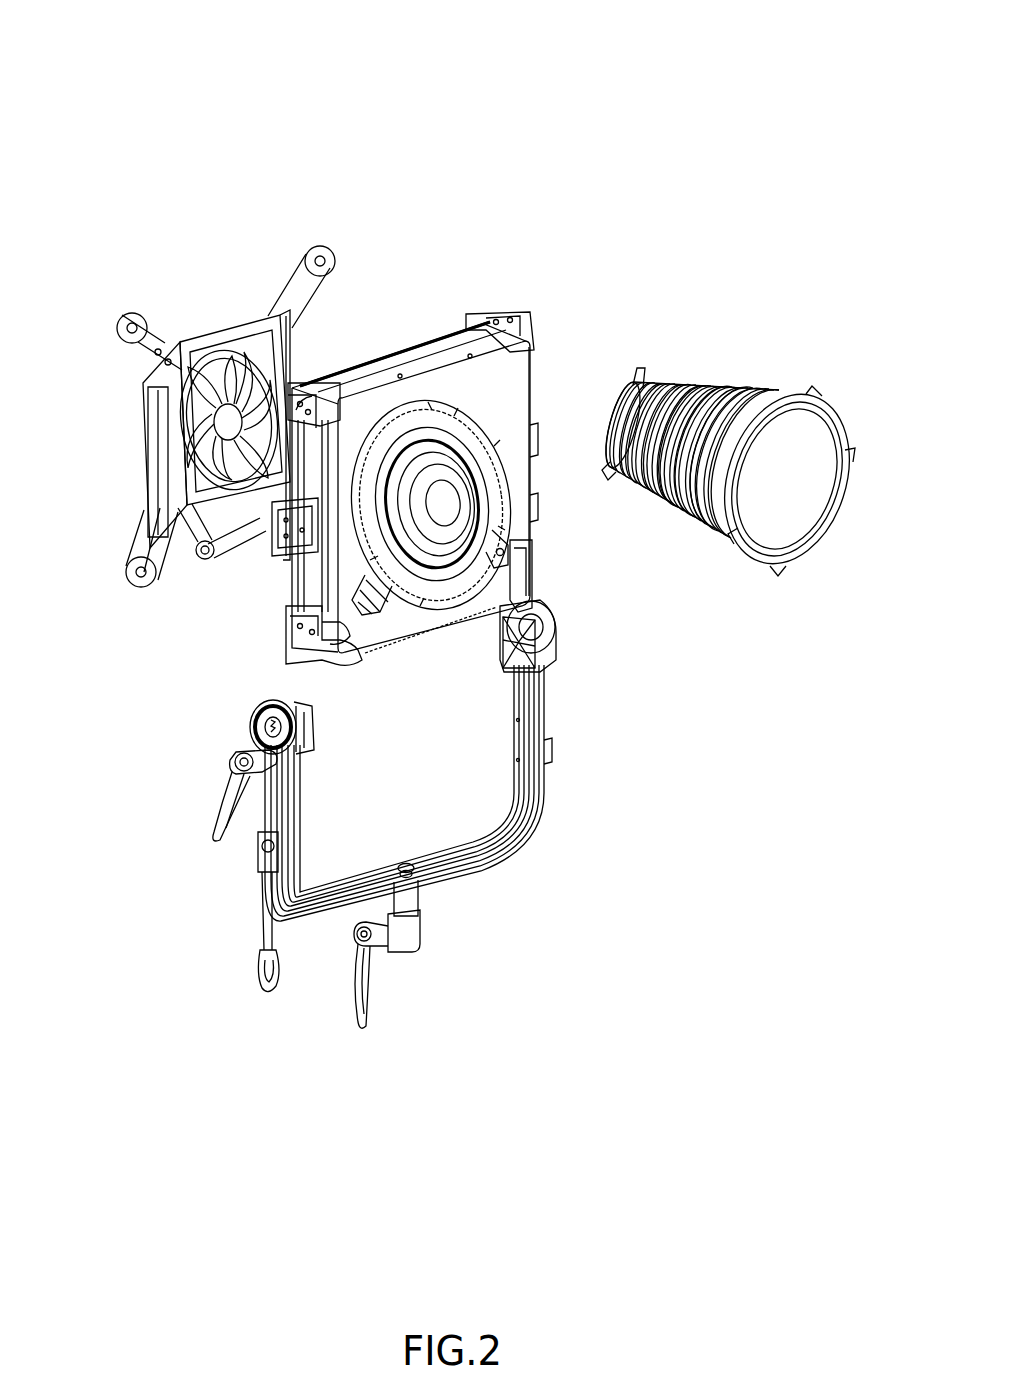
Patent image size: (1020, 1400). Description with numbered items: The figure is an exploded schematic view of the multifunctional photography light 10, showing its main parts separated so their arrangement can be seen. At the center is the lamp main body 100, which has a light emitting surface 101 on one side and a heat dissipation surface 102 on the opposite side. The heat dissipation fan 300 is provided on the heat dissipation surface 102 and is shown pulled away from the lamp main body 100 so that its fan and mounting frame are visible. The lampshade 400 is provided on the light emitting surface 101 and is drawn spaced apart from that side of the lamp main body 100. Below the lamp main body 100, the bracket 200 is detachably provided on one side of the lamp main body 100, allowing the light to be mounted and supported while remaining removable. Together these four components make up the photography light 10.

The multifunctional photography light 10 is at (478, 34).
The lamp main body 100 is at (492, 352).
The light emitting surface 101 is at (525, 405).
The heat dissipation surface 102 is at (410, 340).
The bracket 200 is at (480, 866).
The heat dissipation fan 300 is at (140, 468).
The lampshade 400 is at (762, 510).